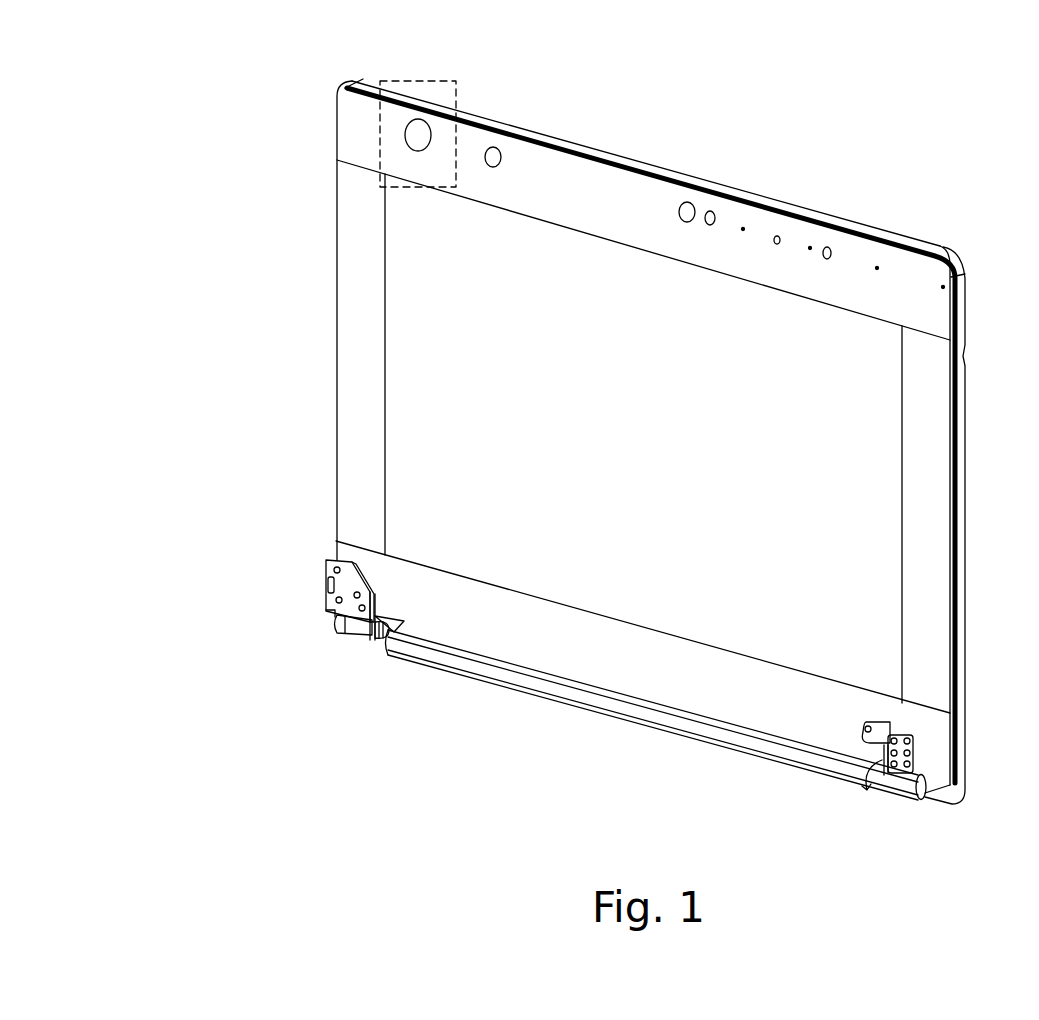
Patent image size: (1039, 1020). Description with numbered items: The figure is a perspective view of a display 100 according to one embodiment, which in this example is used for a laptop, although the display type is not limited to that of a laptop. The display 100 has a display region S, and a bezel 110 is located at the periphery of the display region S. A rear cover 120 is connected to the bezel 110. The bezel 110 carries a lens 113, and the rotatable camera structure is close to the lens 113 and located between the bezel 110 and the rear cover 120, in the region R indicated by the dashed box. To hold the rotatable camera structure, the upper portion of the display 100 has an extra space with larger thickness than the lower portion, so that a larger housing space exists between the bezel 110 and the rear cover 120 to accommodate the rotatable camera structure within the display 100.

The display 100 is at (232, 49).
The bezel 110 is at (350, 130).
The lens 113 is at (415, 138).
The rear cover 120 is at (470, 114).
The region R is at (433, 80).
The display region S is at (870, 542).